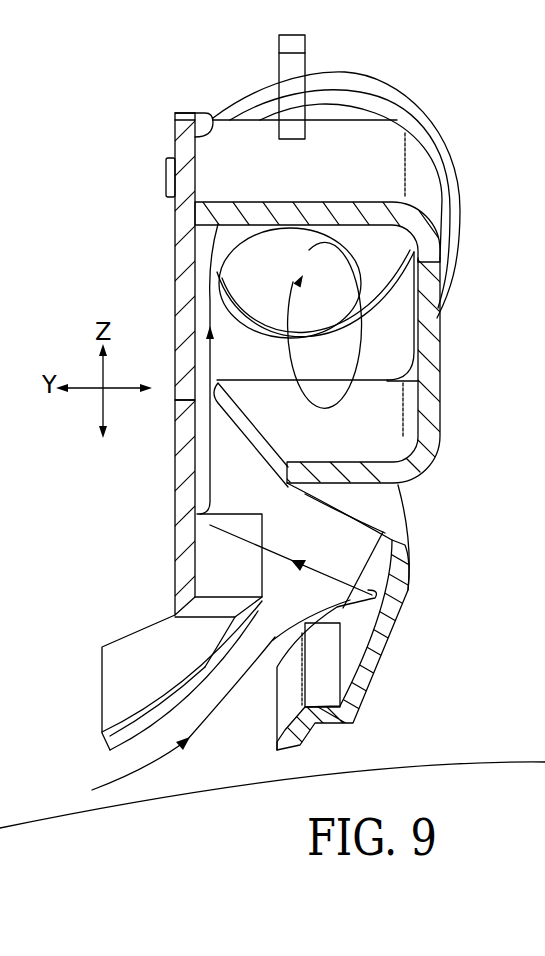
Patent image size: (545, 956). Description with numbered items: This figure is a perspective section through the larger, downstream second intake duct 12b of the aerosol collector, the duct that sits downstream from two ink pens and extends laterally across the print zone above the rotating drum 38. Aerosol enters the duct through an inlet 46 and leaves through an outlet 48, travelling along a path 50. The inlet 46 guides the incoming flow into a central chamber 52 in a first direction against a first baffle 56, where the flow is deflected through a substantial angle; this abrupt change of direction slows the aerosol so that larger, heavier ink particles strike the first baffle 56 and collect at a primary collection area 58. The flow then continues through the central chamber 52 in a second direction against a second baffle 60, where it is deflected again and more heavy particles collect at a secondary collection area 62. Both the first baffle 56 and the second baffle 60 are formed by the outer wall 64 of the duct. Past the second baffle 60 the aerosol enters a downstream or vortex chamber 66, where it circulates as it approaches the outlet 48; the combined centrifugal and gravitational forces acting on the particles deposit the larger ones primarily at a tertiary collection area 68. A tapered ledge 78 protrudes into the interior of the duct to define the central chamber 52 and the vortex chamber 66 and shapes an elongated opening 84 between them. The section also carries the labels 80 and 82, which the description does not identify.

The second intake duct 12b is at (452, 118).
The drum 38 is at (472, 763).
The inlet 46 is at (222, 730).
The outlet 48 is at (377, 275).
The path 50 is at (118, 781).
The central chamber 52 is at (337, 548).
The first baffle 56 is at (383, 637).
The primary collection area 58 is at (362, 623).
The second baffle 60 is at (192, 497).
The secondary collection area 62 is at (198, 537).
The outer wall 64 is at (180, 260).
The downstream chamber (vortex chamber) 66 is at (281, 260).
The tertiary collection area 68 is at (380, 413).
The tapered ledge 78 is at (265, 394).
The return channel 80 is at (315, 686).
The return flow 82 is at (237, 528).
The elongated opening 84 is at (218, 418).